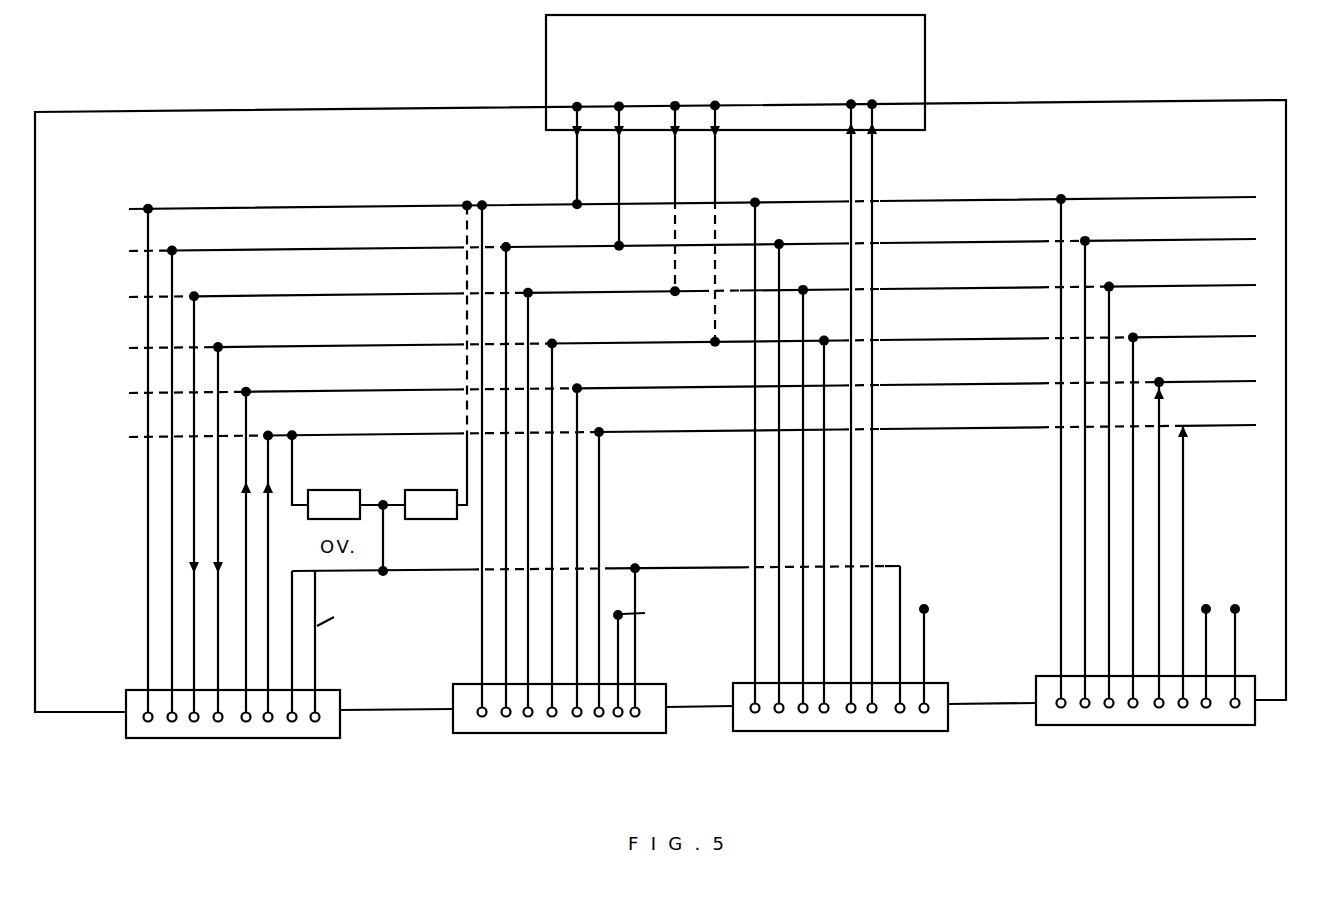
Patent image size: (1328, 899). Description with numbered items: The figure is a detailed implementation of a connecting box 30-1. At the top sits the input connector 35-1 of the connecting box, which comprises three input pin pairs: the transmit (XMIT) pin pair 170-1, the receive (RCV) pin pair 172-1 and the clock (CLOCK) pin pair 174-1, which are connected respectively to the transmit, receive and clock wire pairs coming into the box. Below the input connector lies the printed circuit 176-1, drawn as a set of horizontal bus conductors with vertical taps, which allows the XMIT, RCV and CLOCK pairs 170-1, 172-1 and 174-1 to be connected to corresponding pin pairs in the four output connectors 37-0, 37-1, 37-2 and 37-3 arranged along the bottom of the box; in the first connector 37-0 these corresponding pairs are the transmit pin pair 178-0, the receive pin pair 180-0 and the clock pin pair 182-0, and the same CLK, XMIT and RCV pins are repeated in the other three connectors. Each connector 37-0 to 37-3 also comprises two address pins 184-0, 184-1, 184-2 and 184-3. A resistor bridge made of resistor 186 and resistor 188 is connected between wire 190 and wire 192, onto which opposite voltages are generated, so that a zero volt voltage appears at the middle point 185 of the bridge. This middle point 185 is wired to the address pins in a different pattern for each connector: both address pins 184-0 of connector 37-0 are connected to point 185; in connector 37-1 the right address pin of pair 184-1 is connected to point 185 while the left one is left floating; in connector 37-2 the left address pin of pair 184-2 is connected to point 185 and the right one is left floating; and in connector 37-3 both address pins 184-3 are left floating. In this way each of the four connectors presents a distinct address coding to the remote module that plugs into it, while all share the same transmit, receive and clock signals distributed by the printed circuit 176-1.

The connecting box 30-1 is at (660, 372).
The input connector 35-1 is at (925, 60).
The clock input pin pair 174-1 is at (590, 141).
The transmit input pin pair 170-1 is at (701, 189).
The receive input pin pair 172-1 is at (878, 366).
The printed circuit 176-1 is at (692, 282).
The wire 190 is at (440, 207).
The wire 192 is at (377, 433).
The resistor 186 is at (327, 490).
The resistor 188 is at (420, 490).
The middle point 185 is at (596, 552).
The connector 37-0 is at (340, 738).
The connector 37-1 is at (666, 733).
The connector 37-2 is at (948, 731).
The connector 37-3 is at (1255, 725).
The address pins 184-0 is at (305, 719).
The address pins 184-1 is at (630, 717).
The address pins 184-2 is at (912, 713).
The address pins 184-3 is at (1220, 710).
The clock pin pair 182-0 is at (157, 719).
The transmit pin pair 178-0 is at (207, 719).
The receive pin pair 180-0 is at (256, 719).